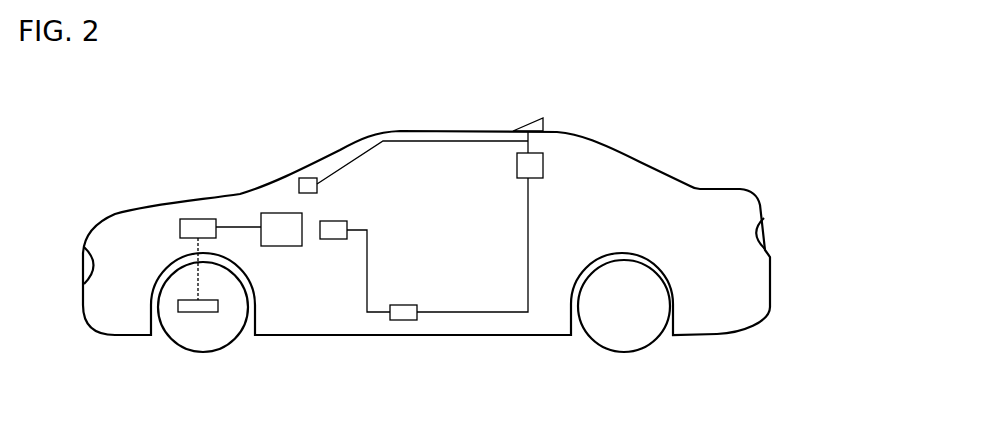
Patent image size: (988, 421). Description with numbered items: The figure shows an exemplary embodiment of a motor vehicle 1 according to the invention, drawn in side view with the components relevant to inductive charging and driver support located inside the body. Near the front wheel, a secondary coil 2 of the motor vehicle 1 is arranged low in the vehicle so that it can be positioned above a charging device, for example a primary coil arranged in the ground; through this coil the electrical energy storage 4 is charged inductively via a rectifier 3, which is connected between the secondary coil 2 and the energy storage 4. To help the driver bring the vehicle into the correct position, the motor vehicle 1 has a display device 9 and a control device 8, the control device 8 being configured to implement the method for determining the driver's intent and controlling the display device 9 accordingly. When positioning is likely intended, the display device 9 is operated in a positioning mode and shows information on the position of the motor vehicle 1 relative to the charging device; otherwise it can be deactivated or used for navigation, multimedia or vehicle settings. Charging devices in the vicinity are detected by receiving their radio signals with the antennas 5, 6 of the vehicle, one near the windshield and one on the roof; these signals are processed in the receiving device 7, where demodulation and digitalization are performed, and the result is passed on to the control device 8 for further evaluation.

The motor vehicle 1 is at (417, 83).
The secondary coil 2 is at (192, 312).
The rectifier 3 is at (203, 219).
The electrical energy storage 4 is at (275, 211).
The antenna 5 is at (304, 177).
The antenna 6 is at (529, 124).
The receiving device 7 is at (543, 165).
The control device 8 is at (403, 305).
The display device 9 is at (336, 219).